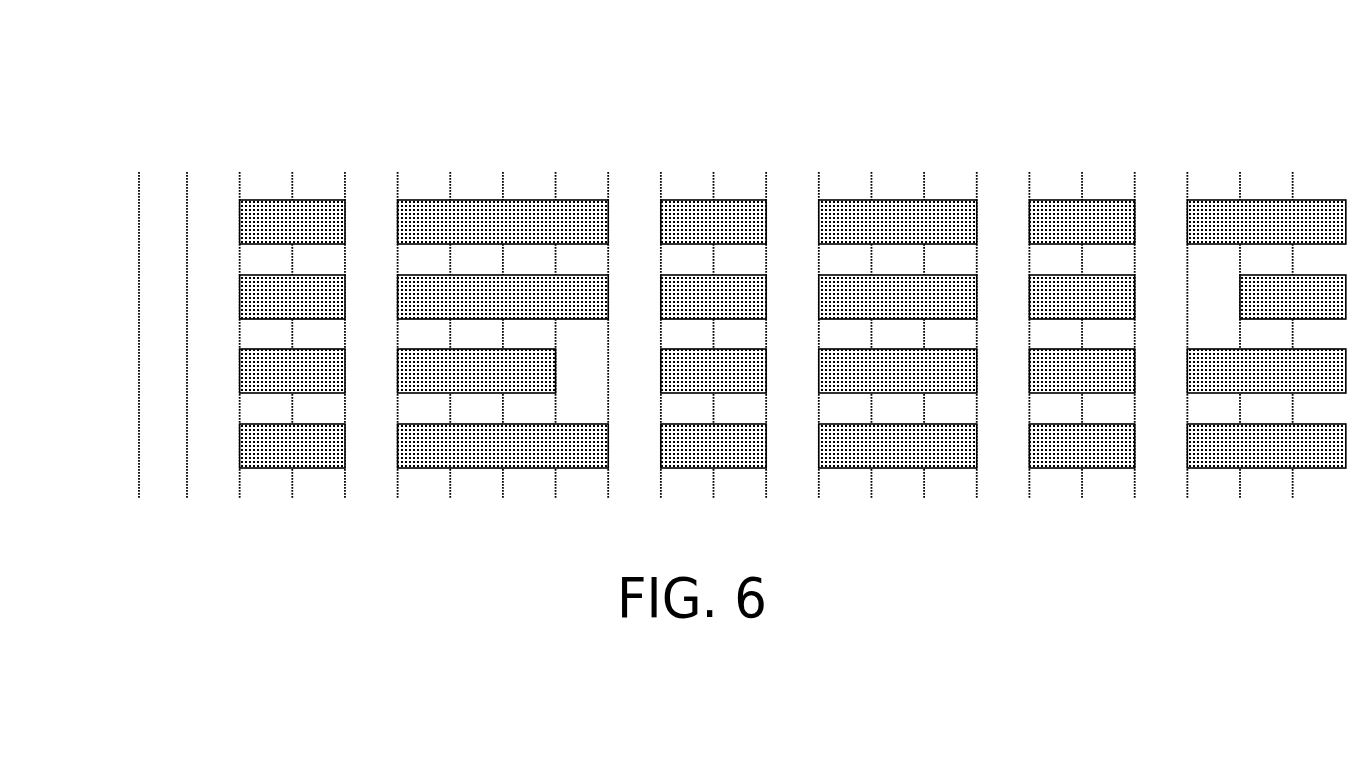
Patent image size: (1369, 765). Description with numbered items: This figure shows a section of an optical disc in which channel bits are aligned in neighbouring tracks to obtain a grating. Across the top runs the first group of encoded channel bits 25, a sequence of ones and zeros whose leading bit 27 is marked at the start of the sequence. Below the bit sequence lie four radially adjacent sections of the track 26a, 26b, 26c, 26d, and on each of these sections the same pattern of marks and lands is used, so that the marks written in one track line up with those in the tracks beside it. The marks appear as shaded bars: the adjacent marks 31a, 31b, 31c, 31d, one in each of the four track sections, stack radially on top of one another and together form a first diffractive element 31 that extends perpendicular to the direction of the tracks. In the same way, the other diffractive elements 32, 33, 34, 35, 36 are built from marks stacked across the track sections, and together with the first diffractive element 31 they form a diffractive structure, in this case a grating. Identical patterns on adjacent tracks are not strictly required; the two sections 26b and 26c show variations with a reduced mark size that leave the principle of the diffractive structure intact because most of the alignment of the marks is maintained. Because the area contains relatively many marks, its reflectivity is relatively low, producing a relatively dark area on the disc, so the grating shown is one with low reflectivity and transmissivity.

The first group of channel bits 25 is at (150, 143).
The start bit 27 is at (185, 118).
The first radially adjacent section of the track 26a is at (128, 225).
The second radially adjacent section of the track 26b is at (128, 300).
The third radially adjacent section of the track 26c is at (128, 375).
The fourth radially adjacent section of the track 26d is at (128, 449).
The first diffractive element 31 is at (292, 96).
The diffractive element 32 is at (503, 96).
The diffractive element 33 is at (714, 96).
The diffractive element 34 is at (899, 96).
The diffractive element 35 is at (1082, 96).
The diffractive element 36 is at (1266, 96).
The adjacent mark 31a is at (239, 223).
The adjacent mark 31b is at (239, 298).
The adjacent mark 31c is at (239, 372).
The adjacent mark 31d is at (239, 447).